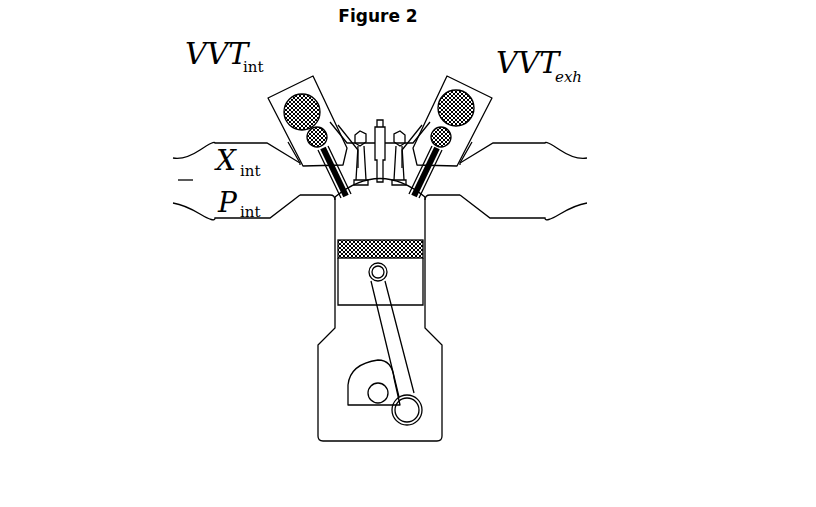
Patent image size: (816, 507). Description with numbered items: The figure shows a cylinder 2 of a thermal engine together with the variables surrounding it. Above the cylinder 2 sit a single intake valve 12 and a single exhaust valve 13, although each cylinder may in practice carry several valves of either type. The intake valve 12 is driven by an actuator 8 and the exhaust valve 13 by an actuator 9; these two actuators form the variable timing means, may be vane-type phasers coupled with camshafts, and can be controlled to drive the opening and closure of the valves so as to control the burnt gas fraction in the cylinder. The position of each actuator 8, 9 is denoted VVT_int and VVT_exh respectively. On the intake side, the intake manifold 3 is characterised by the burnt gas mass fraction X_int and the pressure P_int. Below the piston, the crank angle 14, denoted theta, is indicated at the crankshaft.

The cylinder 2 is at (430, 307).
The intake manifold 3 is at (222, 224).
The intake valve actuator 8 is at (258, 110).
The exhaust valve actuator 9 is at (499, 105).
The intake valve 12 is at (324, 182).
The exhaust valve 13 is at (431, 174).
The crank angle 14 is at (331, 384).